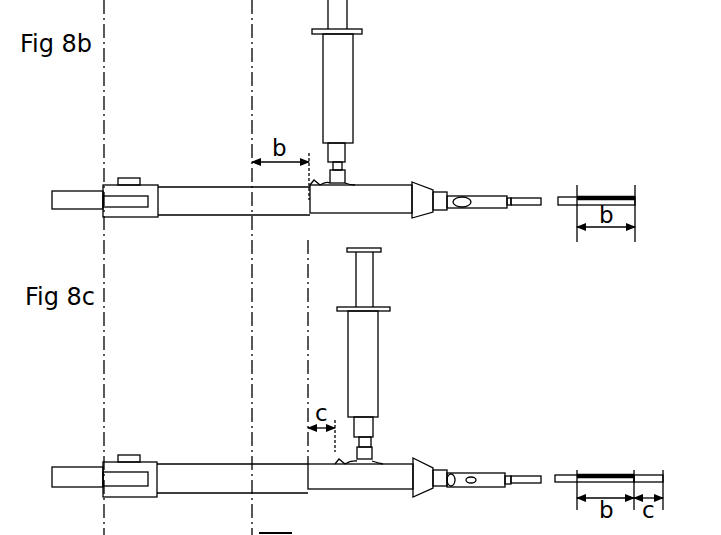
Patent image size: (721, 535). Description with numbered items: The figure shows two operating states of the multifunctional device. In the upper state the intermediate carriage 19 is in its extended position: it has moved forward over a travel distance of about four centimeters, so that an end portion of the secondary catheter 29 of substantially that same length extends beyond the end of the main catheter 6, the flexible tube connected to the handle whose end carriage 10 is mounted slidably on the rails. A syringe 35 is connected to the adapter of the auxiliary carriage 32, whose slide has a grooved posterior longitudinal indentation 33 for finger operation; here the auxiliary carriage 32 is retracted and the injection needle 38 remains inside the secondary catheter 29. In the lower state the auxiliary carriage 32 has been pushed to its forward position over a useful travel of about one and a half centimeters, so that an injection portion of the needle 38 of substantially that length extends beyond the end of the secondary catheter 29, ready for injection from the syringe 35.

In FIG. 8B, the flexible tube 6 is at (527, 198).
In FIG. 8C, the flexible tube 6 is at (525, 475).
In FIG. 8B, the end carriage 10 is at (150, 184).
In FIG. 8C, the end carriage 10 is at (152, 466).
In FIG. 8B, the intermediate carriage 19 is at (392, 192).
In FIG. 8C, the intermediate carriage 19 is at (393, 478).
In FIG. 8B, the flexible tube 29 is at (610, 197).
In FIG. 8C, the flexible tube 29 is at (595, 474).
In FIG. 8B, the auxiliary carriage 32 is at (342, 180).
In FIG. 8C, the auxiliary carriage 32 is at (372, 458).
In FIG. 8B, the posterior longitudinal indentation 33 is at (462, 198).
In FIG. 8C, the posterior longitudinal indentation 33 is at (470, 478).
In FIG. 8B, the syringe 35 is at (345, 65).
In FIG. 8C, the syringe 35 is at (370, 338).
In FIG. 8C, the injection needle 38 is at (648, 474).